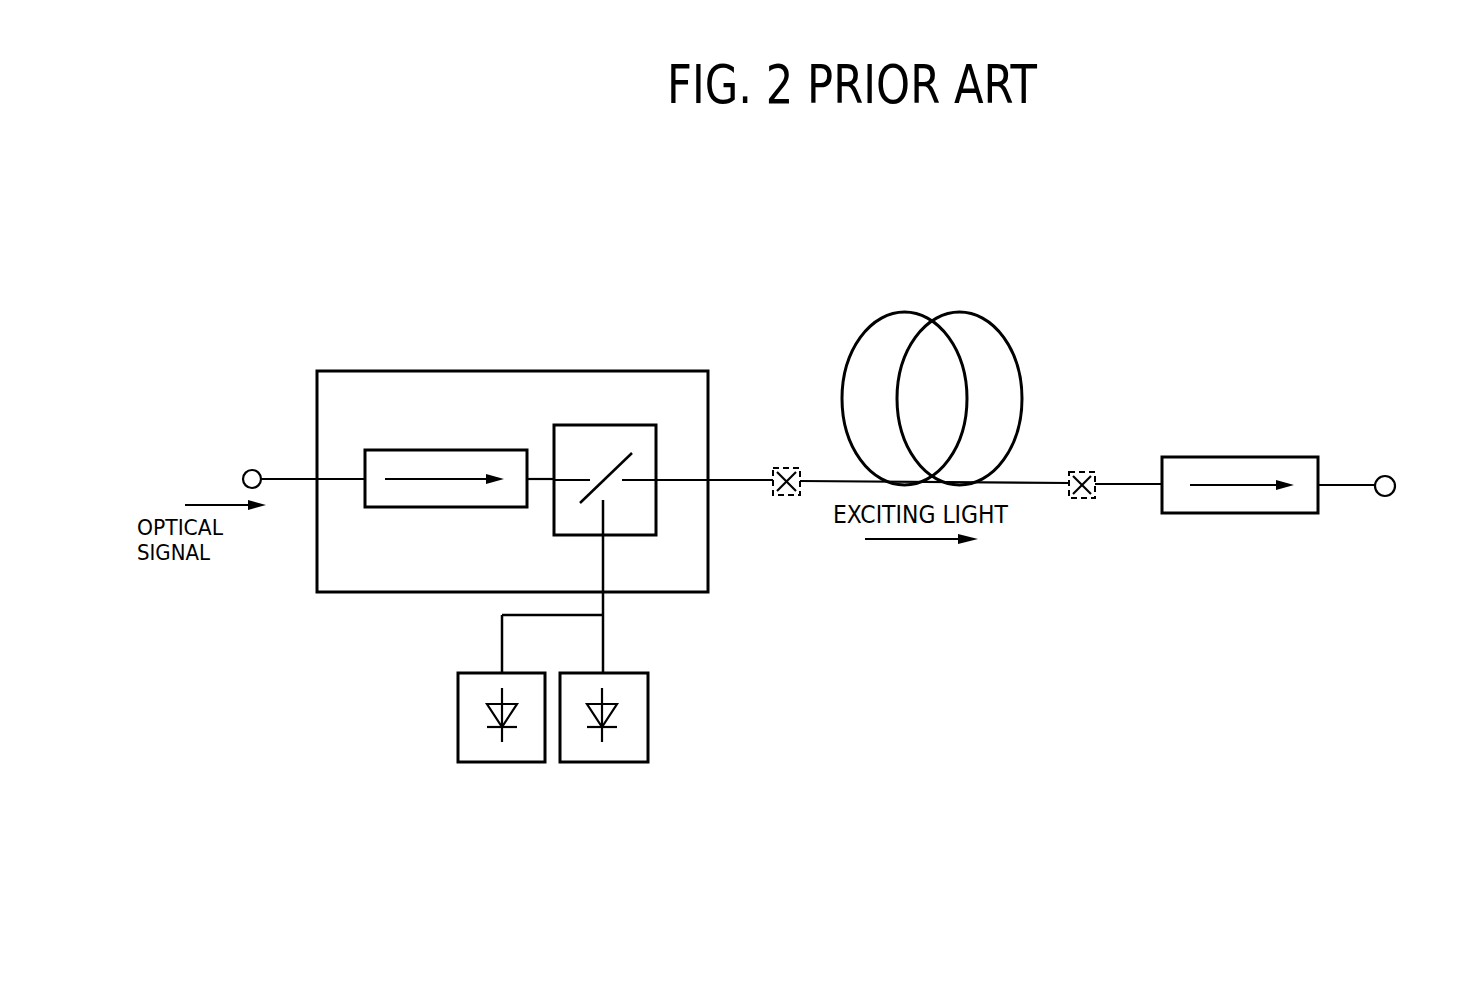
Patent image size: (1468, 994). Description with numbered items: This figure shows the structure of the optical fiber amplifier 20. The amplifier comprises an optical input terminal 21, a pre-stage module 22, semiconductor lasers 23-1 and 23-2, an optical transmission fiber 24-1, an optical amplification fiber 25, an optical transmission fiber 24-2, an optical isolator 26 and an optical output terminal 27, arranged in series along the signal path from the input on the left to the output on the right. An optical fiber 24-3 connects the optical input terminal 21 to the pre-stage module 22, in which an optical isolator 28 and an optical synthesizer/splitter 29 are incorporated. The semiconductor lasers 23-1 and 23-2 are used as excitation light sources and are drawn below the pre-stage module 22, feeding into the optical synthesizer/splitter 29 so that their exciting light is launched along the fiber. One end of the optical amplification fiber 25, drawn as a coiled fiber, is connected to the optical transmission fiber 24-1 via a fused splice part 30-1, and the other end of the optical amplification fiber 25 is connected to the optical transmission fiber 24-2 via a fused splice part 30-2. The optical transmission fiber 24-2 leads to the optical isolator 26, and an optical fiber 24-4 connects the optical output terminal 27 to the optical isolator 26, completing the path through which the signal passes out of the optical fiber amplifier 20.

The optical fiber amplifier 20 is at (1290, 223).
The optical input terminal 21 is at (252, 469).
The pre-stage module 22 is at (333, 369).
The semiconductor laser 23-1 is at (652, 740).
The semiconductor laser 23-2 is at (520, 763).
The optical transmission fiber 24-1 is at (728, 479).
The optical transmission fiber 24-2 is at (1127, 483).
The optical fiber 24-3 is at (287, 479).
The optical fiber 24-4 is at (1337, 484).
The optical amplification fiber 25 is at (918, 311).
The optical isolator 26 is at (1207, 457).
The optical output terminal 27 is at (1382, 498).
The optical isolator 28 is at (393, 507).
The optical synthesizer/splitter 29 is at (633, 537).
The fused splice part 30-1 is at (797, 498).
The fused splice part 30-2 is at (1082, 500).